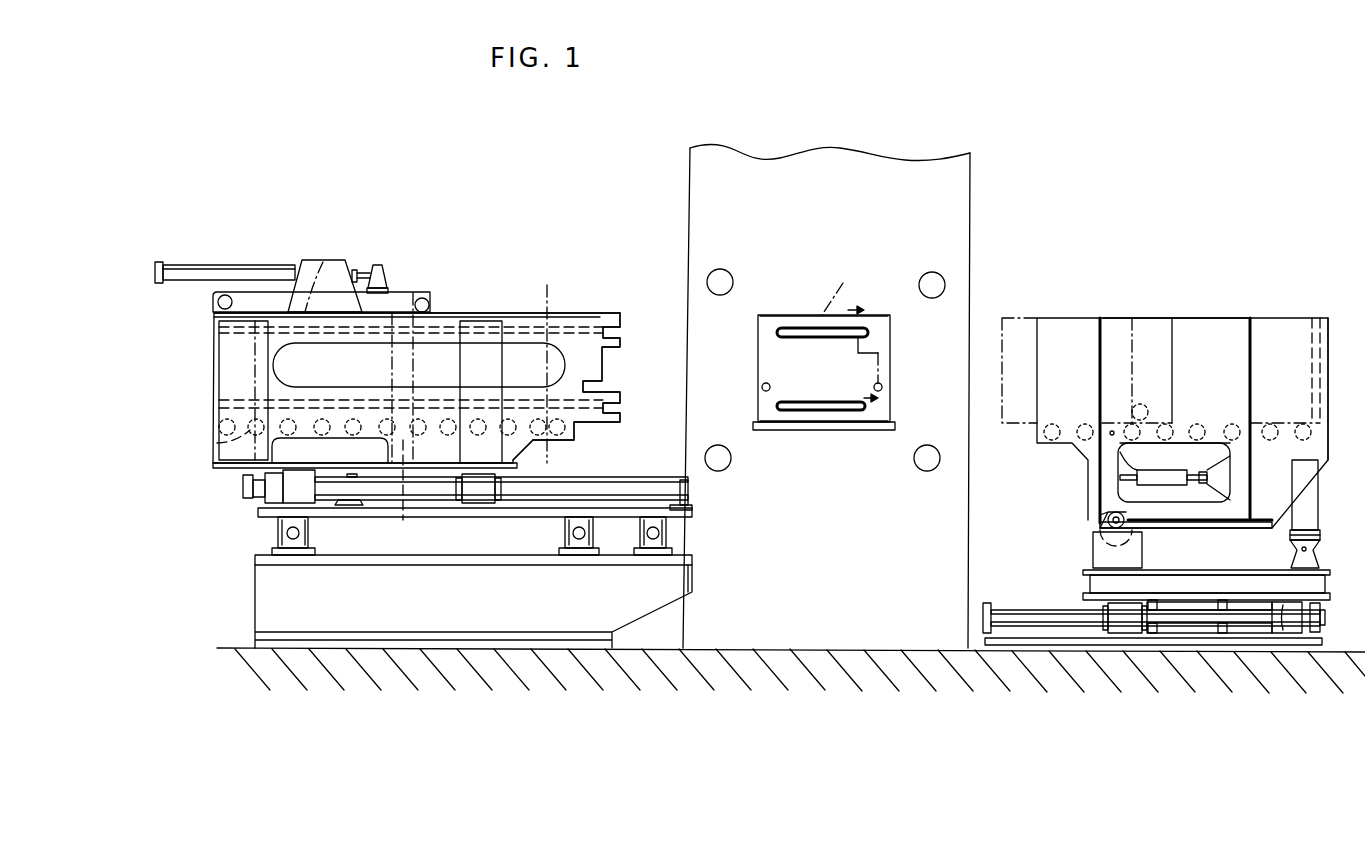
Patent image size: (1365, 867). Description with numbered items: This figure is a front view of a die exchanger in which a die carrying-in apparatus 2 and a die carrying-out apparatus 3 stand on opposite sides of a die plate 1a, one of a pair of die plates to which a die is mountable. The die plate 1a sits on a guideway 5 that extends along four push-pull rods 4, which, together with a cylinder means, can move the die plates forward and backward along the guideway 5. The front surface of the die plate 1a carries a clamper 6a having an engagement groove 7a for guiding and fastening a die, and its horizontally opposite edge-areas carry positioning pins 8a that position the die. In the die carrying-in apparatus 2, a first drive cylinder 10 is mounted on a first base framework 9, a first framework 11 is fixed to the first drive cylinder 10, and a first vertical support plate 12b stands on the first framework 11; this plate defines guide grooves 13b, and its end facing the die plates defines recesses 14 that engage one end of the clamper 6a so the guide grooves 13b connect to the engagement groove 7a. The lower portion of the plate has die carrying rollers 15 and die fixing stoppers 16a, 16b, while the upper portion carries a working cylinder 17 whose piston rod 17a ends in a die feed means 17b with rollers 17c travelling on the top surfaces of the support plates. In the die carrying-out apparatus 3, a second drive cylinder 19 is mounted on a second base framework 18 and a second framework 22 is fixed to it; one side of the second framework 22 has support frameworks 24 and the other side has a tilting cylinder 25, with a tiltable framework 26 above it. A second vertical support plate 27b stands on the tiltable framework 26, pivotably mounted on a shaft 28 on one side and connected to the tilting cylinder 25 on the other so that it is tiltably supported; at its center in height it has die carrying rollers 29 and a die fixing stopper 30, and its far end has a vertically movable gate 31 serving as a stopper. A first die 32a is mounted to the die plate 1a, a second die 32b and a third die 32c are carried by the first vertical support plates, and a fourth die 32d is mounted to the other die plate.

The die plate 1a is at (822, 298).
The die carrying-in apparatus 2 is at (204, 409).
The die carrying-out apparatus 3 is at (1118, 308).
The push-pull rods 4 is at (720, 278).
The guideway 5 is at (840, 430).
The clamper 6a is at (788, 315).
The engagement groove 7a is at (870, 332).
The positioning pin 8a is at (762, 385).
The first base framework 9 is at (258, 598).
The first drive cylinder 10 is at (243, 490).
The first framework 11 is at (233, 468).
The first vertical support plate 12b is at (556, 313).
The guide groove 13b is at (580, 328).
The recess 14 is at (610, 333).
The die carrying rollers 15 is at (217, 443).
The die fixing stopper 16a is at (552, 446).
The die fixing stopper 16b is at (475, 510).
The working cylinder 17 is at (263, 266).
The piston rod 17a is at (377, 266).
The die feed means 17b is at (406, 292).
The rollers 17c is at (218, 302).
The second base framework 18 is at (1314, 652).
The second drive cylinder 19 is at (1302, 650).
The second framework 22 is at (1280, 648).
The support framework 24 is at (1100, 553).
The tilting cylinder 25 is at (1313, 503).
The tiltable framework 26 is at (1202, 529).
The second vertical support plate 27b is at (1164, 318).
The shaft 28 is at (1106, 515).
The die carrying rollers 29 is at (1200, 423).
The die fixing stopper 30 is at (1142, 404).
The gate 31 is at (1318, 345).
The first die 32a is at (1285, 360).
The second die 32b is at (447, 318).
The third die 32c is at (325, 274).
The fourth die 32d is at (1031, 322).